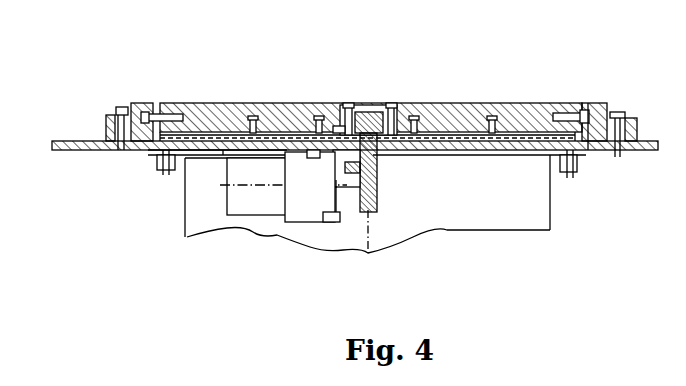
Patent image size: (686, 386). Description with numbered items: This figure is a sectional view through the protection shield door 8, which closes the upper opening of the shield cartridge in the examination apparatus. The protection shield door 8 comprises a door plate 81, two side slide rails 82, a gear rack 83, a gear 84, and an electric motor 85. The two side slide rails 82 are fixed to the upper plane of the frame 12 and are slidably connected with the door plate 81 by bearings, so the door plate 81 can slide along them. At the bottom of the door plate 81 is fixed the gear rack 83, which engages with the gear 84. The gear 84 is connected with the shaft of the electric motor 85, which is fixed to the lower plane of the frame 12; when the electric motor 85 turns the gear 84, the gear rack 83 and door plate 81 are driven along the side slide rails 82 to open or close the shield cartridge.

The protection shield door 8 is at (213, 100).
The frame 12 is at (73, 141).
The door plate 81 is at (453, 100).
The side slide rails 82 is at (590, 100).
The gear rack 83 is at (380, 160).
The gear 84 is at (378, 212).
The electric motor 85 is at (262, 200).